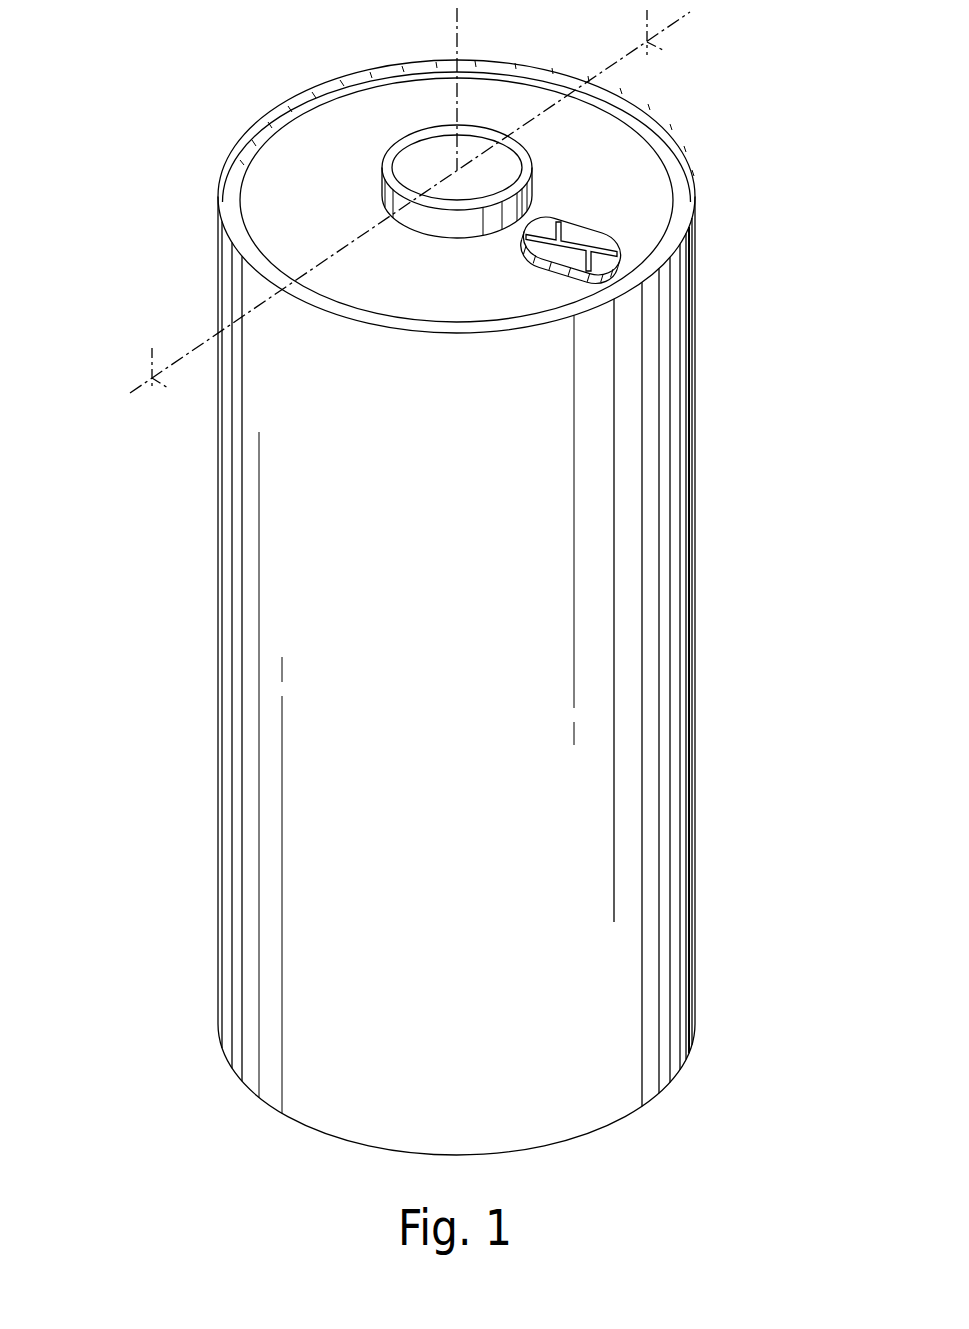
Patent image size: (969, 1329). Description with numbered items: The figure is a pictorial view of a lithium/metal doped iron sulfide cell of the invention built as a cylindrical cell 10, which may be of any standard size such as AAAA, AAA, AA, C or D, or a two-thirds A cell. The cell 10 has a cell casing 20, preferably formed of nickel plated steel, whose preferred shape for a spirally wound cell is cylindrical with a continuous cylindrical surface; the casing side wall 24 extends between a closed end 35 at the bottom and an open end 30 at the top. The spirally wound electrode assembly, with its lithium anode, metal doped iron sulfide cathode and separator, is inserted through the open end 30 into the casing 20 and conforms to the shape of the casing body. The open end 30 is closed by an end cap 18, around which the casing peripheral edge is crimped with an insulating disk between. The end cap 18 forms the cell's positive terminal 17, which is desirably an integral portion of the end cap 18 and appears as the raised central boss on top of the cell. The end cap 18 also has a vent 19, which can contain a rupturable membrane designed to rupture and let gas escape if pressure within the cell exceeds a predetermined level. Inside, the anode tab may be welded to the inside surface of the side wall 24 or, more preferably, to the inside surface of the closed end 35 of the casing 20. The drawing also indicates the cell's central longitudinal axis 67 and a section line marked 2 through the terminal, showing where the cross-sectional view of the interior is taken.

The cylindrical cell 10 is at (190, 602).
The cell casing 20 is at (700, 488).
The casing side wall 24 is at (696, 402).
The open end 30 is at (634, 158).
The end cap 18 is at (652, 203).
The positive terminal 17 is at (410, 142).
The vent 19 is at (556, 255).
The closed end 35 is at (290, 1115).
The longitudinal axis 67 is at (458, 40).
The section line 2- 2 is at (605, 18).